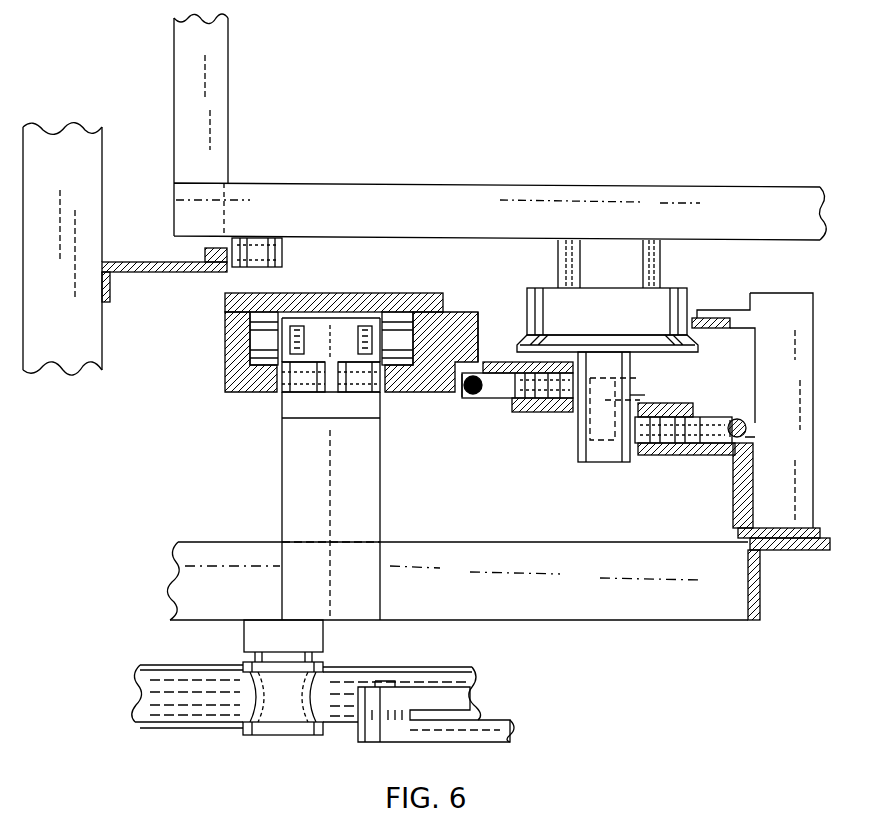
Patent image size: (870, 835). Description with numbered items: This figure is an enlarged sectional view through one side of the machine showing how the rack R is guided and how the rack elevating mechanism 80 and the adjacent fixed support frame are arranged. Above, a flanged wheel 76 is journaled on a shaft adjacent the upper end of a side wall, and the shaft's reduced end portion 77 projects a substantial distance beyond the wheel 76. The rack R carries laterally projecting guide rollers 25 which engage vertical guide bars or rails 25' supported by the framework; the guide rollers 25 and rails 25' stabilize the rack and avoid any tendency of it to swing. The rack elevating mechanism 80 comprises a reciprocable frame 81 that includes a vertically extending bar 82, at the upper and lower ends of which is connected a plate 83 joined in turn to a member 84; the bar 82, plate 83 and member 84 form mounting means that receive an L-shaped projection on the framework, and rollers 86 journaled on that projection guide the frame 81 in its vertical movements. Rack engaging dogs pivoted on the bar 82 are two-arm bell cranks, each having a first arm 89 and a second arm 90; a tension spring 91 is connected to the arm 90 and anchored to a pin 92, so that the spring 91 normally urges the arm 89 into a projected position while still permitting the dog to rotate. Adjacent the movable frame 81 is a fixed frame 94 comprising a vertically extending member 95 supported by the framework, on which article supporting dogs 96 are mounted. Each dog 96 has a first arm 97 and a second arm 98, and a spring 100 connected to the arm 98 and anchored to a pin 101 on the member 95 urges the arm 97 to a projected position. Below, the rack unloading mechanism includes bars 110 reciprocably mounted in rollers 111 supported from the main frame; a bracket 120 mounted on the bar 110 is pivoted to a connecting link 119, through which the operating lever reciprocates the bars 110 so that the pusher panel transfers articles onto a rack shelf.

The rack R is at (166, 60).
The guide rollers 25 is at (283, 253).
The guide bars or rails 25' is at (164, 287).
The flanged wheel 76 is at (678, 300).
The reduced end portion 77 is at (604, 462).
The rack elevating mechanism 80 is at (664, 622).
The reciprocable frame 81 is at (222, 413).
The vertically extending bar 82 is at (420, 390).
The plate 83 is at (348, 293).
The member 84 is at (225, 376).
The rollers 86 is at (278, 382).
The first arm 89 is at (592, 392).
The second arm 90 is at (504, 394).
The tension spring 91 is at (468, 396).
The pin 92 is at (480, 366).
The fixed frame 94 is at (707, 495).
The vertically extending member 95 is at (700, 455).
The article supporting fingers or dogs 96 is at (707, 413).
The first arm 97 is at (640, 403).
The second arm 98 is at (718, 425).
The spring 100 is at (743, 423).
The pin 101 is at (745, 437).
The bars 110 is at (207, 722).
The rollers 111 is at (276, 722).
The connecting link 119 is at (507, 742).
The bracket 120 is at (470, 697).